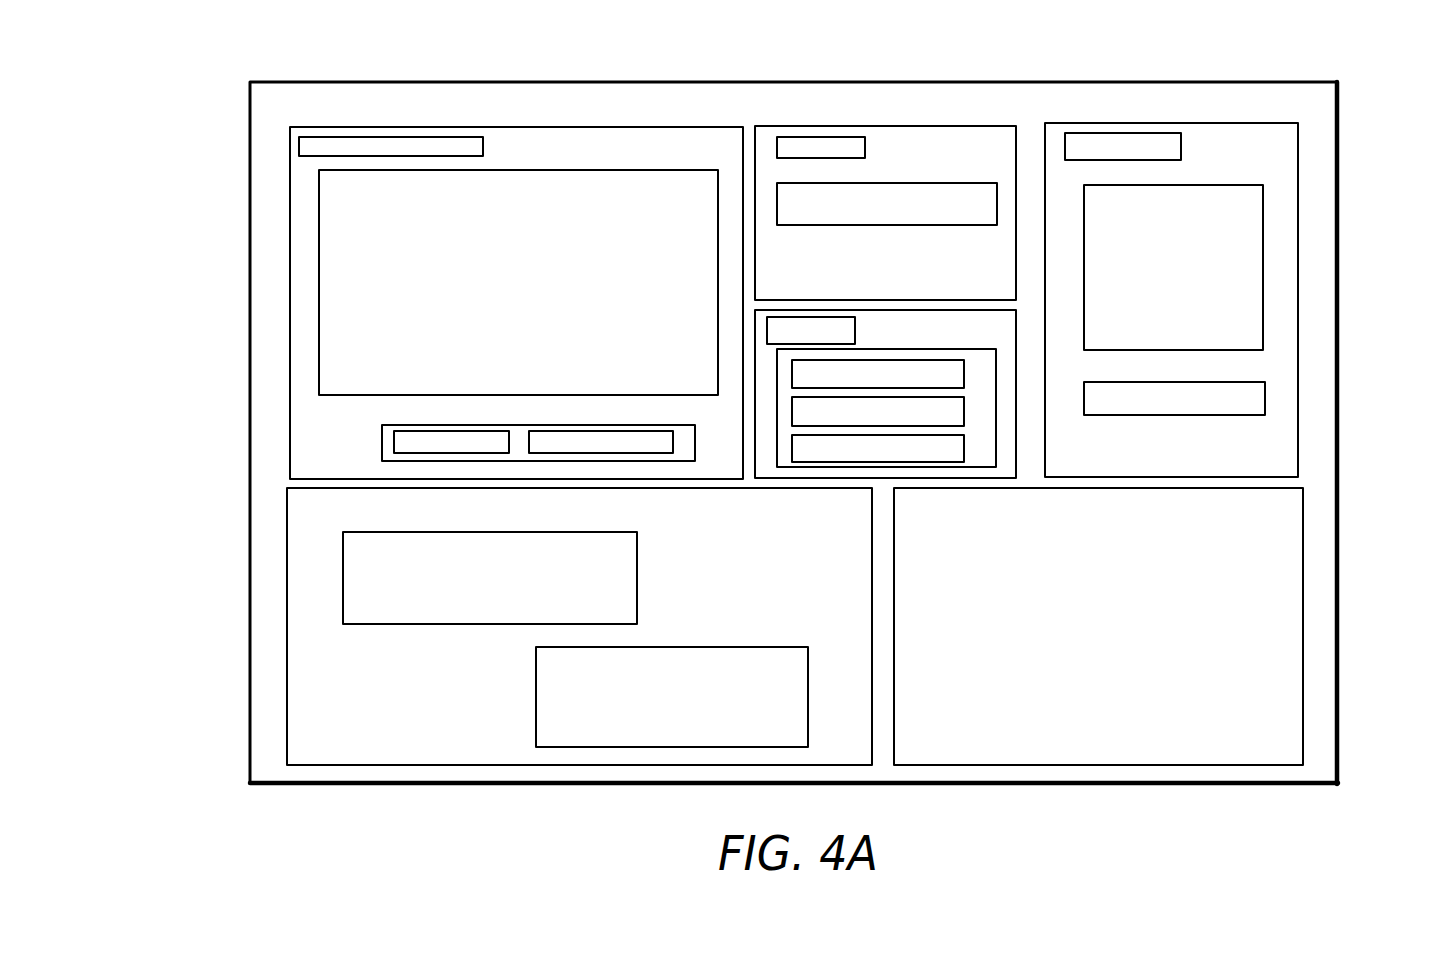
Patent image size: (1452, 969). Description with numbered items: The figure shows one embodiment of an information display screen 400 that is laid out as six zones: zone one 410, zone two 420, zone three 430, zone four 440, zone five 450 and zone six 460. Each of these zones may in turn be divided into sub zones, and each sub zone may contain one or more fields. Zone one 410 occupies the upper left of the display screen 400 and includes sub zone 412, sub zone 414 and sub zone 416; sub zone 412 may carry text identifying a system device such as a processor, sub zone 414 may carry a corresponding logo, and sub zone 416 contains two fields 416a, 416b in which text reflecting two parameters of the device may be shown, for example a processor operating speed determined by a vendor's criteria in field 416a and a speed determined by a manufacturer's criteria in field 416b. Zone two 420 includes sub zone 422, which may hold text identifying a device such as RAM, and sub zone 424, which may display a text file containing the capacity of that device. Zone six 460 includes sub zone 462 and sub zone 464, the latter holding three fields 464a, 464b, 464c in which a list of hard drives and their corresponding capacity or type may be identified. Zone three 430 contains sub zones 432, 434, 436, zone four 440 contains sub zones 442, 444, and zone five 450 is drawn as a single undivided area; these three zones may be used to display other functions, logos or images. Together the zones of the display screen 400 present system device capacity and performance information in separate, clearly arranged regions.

The information display screen 400 is at (1218, 55).
The zone 1 410 is at (413, 127).
The sub zone 412 is at (299, 146).
The sub zone 414 is at (319, 236).
The sub zone 416 is at (382, 447).
The field 416a is at (423, 431).
The field 416b is at (557, 431).
The zone 2 420 is at (800, 125).
The sub zone 422 is at (840, 137).
The sub zone 424 is at (938, 183).
The zone 3 430 is at (1298, 177).
The sub zone 432 is at (1175, 141).
The sub zone 434 is at (1263, 232).
The sub zone 436 is at (1265, 395).
The zone 4 440 is at (287, 725).
The sub zone 442 is at (343, 562).
The sub zone 444 is at (536, 680).
The zone 5 450 is at (1303, 578).
The zone 6 460 is at (1018, 452).
The sub zone 462 is at (830, 342).
The sub zone 464 is at (895, 349).
The field 464a is at (898, 385).
The field 464b is at (898, 423).
The field 464c is at (898, 460).